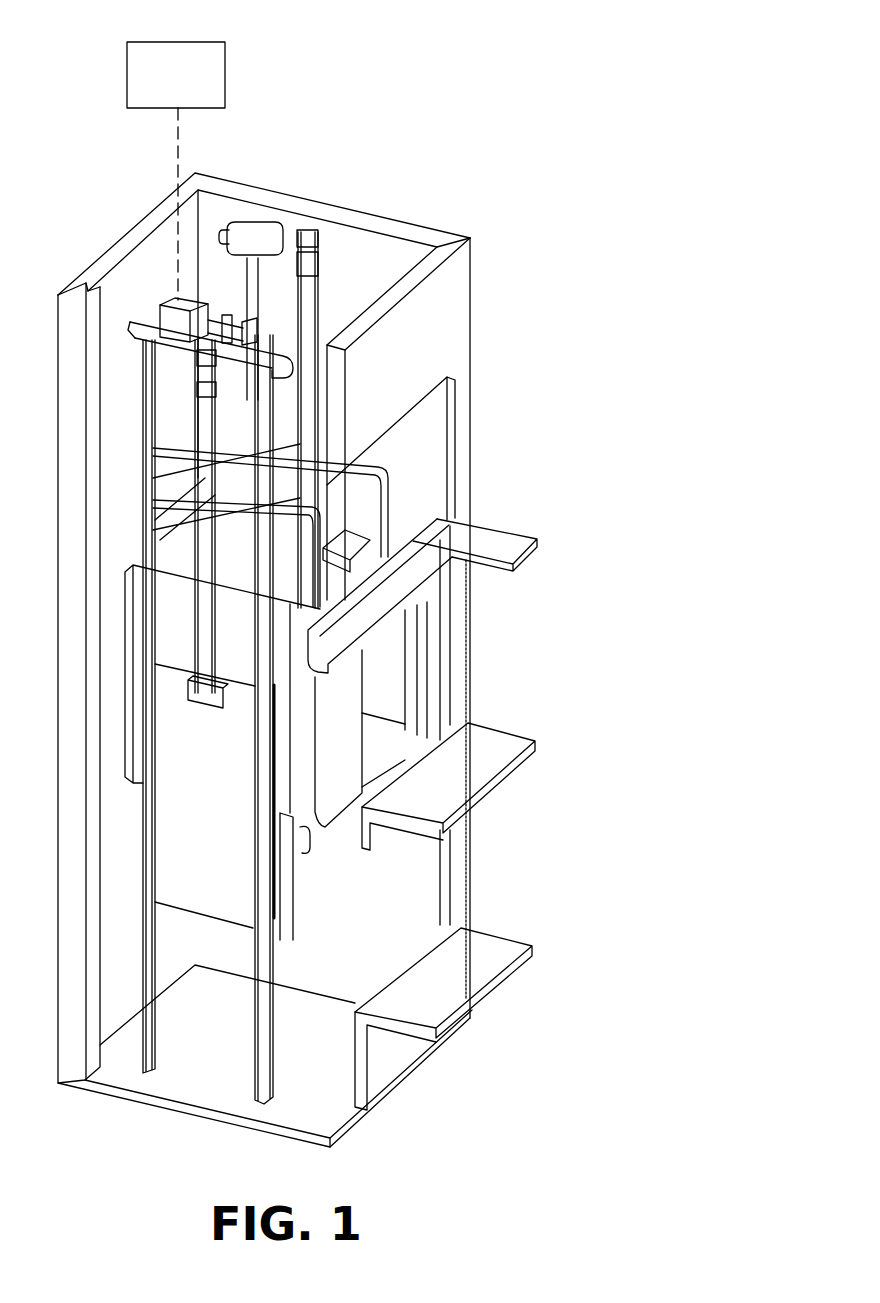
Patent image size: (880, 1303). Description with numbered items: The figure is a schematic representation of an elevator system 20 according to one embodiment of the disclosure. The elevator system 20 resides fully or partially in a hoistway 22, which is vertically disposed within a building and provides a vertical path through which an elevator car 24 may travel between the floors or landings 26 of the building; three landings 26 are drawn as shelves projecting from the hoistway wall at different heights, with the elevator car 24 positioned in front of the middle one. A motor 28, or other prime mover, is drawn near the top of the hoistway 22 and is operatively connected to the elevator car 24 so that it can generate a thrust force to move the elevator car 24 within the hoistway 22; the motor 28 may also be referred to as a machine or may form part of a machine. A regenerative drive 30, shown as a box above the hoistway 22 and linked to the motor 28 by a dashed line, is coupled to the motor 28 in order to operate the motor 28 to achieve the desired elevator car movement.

The elevator system 20 is at (656, 76).
The hoistway 22 is at (366, 253).
The elevator car 24 is at (410, 652).
The landings 26 is at (502, 538).
The motor 28 is at (162, 298).
The regenerative drive 30 is at (192, 86).